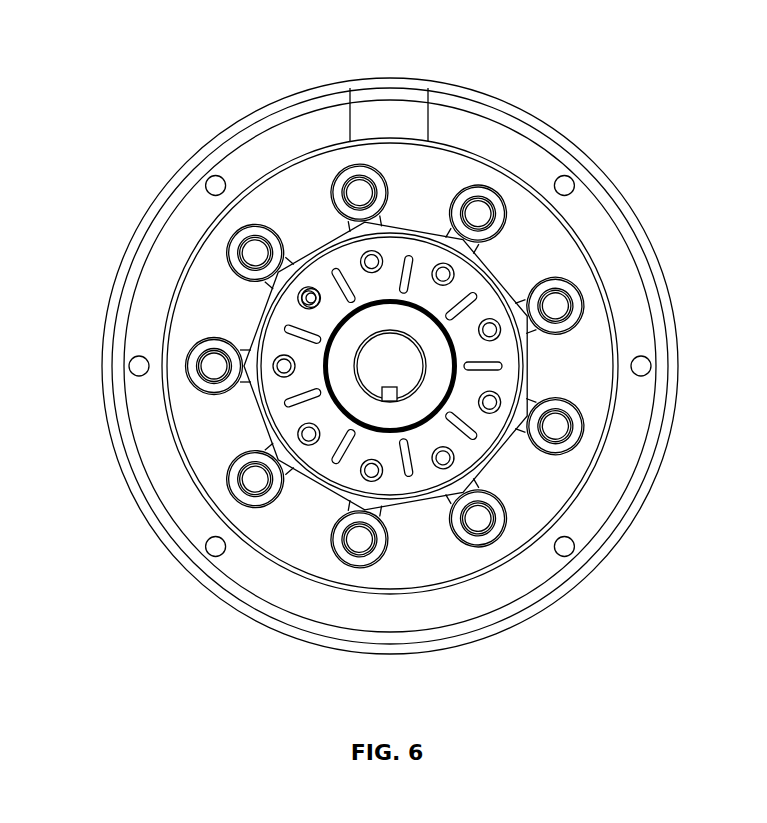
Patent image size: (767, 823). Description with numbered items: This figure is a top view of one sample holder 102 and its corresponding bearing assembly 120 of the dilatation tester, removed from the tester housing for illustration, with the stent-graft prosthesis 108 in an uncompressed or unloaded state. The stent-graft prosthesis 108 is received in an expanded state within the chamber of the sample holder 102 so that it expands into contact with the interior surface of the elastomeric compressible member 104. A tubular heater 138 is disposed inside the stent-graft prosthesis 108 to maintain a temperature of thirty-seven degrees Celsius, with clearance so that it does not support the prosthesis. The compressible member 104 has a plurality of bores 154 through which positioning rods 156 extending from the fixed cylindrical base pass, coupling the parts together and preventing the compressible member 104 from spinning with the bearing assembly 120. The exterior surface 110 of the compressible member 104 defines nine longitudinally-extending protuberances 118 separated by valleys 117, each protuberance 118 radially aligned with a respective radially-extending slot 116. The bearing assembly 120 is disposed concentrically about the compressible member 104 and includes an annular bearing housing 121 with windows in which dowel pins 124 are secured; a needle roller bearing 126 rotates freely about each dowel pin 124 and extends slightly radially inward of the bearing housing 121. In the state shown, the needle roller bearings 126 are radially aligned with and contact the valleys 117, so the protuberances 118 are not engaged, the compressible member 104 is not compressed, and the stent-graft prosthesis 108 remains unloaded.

The sample holder 102 is at (300, 477).
The compressible member 104 is at (273, 387).
The stent-graft prosthesis 108 is at (386, 300).
The exterior surface 110 is at (528, 333).
The radially-extending slot 116 is at (256, 232).
The valley 117 is at (268, 300).
The protuberance 118 is at (266, 322).
The bearing assembly 120 is at (520, 214).
The bearing housing 121 is at (548, 238).
The dowel pin 124 is at (558, 306).
The needle roller bearing 126 is at (573, 288).
The tubular heater 138 is at (418, 325).
The bore 154 is at (307, 290).
The positioning rod 156 is at (319, 289).